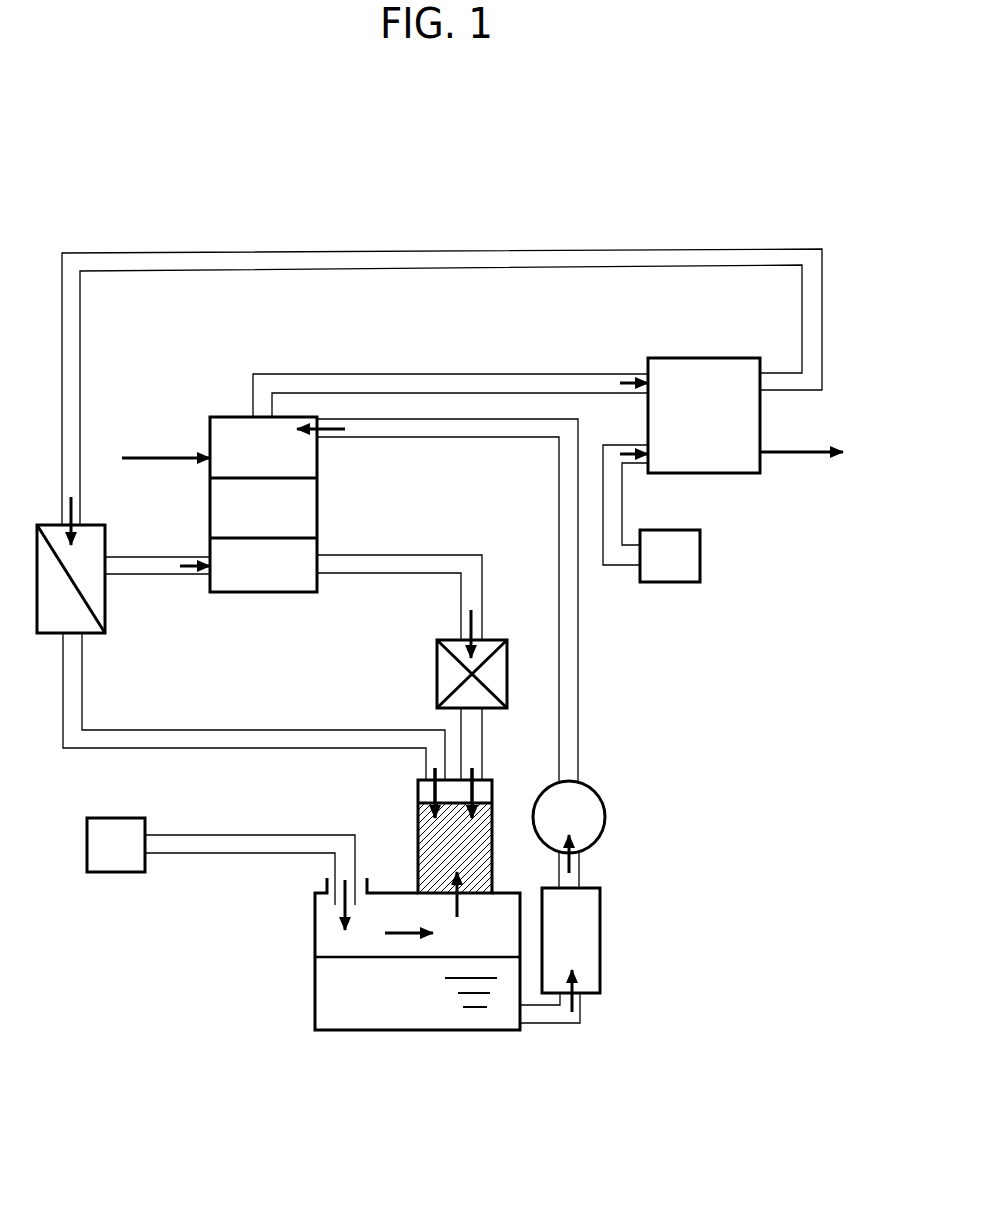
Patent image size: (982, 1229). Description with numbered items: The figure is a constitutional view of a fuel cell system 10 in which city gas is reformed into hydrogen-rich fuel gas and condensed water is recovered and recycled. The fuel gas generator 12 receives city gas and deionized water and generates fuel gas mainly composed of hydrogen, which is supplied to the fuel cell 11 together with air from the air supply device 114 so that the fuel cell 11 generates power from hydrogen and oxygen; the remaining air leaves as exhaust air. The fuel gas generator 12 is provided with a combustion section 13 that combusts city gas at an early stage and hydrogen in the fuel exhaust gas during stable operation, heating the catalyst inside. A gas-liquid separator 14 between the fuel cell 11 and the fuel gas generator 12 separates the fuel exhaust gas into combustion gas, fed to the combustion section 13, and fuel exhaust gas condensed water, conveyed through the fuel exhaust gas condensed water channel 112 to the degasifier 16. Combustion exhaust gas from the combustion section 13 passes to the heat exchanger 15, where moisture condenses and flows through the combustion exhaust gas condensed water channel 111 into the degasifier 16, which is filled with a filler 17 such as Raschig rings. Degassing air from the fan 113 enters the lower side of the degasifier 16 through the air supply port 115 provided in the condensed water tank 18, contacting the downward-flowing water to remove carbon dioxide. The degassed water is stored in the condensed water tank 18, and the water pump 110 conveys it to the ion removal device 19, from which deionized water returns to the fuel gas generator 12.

The fuel cell system 10 is at (102, 223).
The fuel cell 11 is at (747, 428).
The fuel gas generator 12 is at (230, 410).
The combustion section 13 is at (237, 582).
The gas-liquid separator 14 is at (50, 623).
The heat exchanger 15 is at (495, 640).
The degasifier 16 is at (498, 789).
The filler 17 is at (430, 825).
The condensed water tank 18 is at (333, 987).
The ion removal device 19 is at (588, 942).
The water pump 110 is at (607, 808).
The combustion exhaust gas condensed water channel 111 is at (482, 745).
The fuel exhaust gas condensed water channel 112 is at (239, 728).
The fan 113 is at (108, 862).
The air supply device 114 is at (690, 562).
The air supply port 115 is at (360, 880).